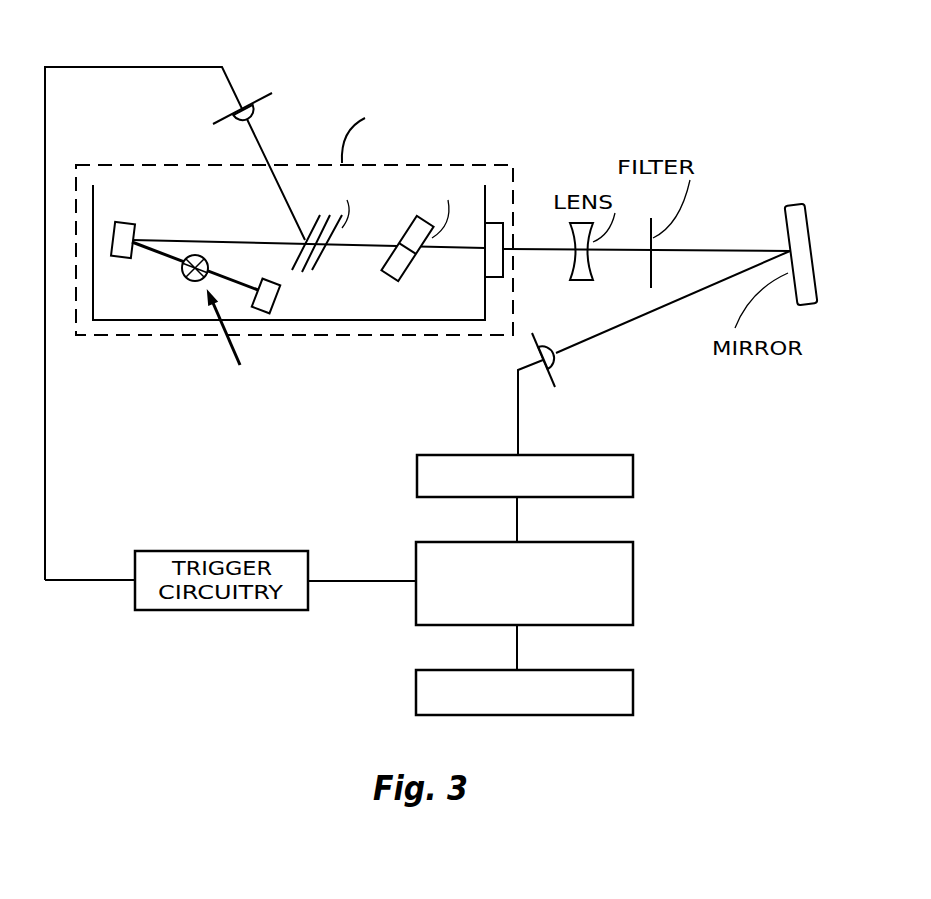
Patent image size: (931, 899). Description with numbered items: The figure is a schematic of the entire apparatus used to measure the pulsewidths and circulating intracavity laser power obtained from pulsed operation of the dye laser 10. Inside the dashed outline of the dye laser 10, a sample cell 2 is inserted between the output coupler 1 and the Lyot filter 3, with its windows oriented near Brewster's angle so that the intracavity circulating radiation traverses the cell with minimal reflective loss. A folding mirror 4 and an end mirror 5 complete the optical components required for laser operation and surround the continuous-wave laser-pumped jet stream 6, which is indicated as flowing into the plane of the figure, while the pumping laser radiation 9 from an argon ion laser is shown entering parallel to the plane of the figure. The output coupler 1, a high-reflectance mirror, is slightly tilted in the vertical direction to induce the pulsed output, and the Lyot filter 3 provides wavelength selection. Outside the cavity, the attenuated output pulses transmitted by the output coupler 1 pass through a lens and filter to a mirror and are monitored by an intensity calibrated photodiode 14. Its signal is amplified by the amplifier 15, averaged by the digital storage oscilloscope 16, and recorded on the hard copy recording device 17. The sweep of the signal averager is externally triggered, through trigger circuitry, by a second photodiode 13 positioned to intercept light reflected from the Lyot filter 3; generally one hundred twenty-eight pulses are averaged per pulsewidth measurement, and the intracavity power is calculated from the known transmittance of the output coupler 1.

The output coupler 1 is at (492, 278).
The sample cell 2 is at (410, 268).
The Lyot filter 3 is at (313, 267).
The folding mirror 4 is at (128, 222).
The end mirror 5 is at (258, 313).
The continuous-wave laser-pumped jet stream 6 is at (180, 270).
The pumping laser radiation 9 is at (230, 358).
The dye laser 10 is at (338, 163).
The second photodiode 13 is at (228, 112).
The intensity calibrated photodiode 14 is at (557, 367).
The amplifier 15 is at (633, 475).
The digital storage oscilloscope 16 is at (633, 581).
The hard copy recording device 17 is at (633, 694).